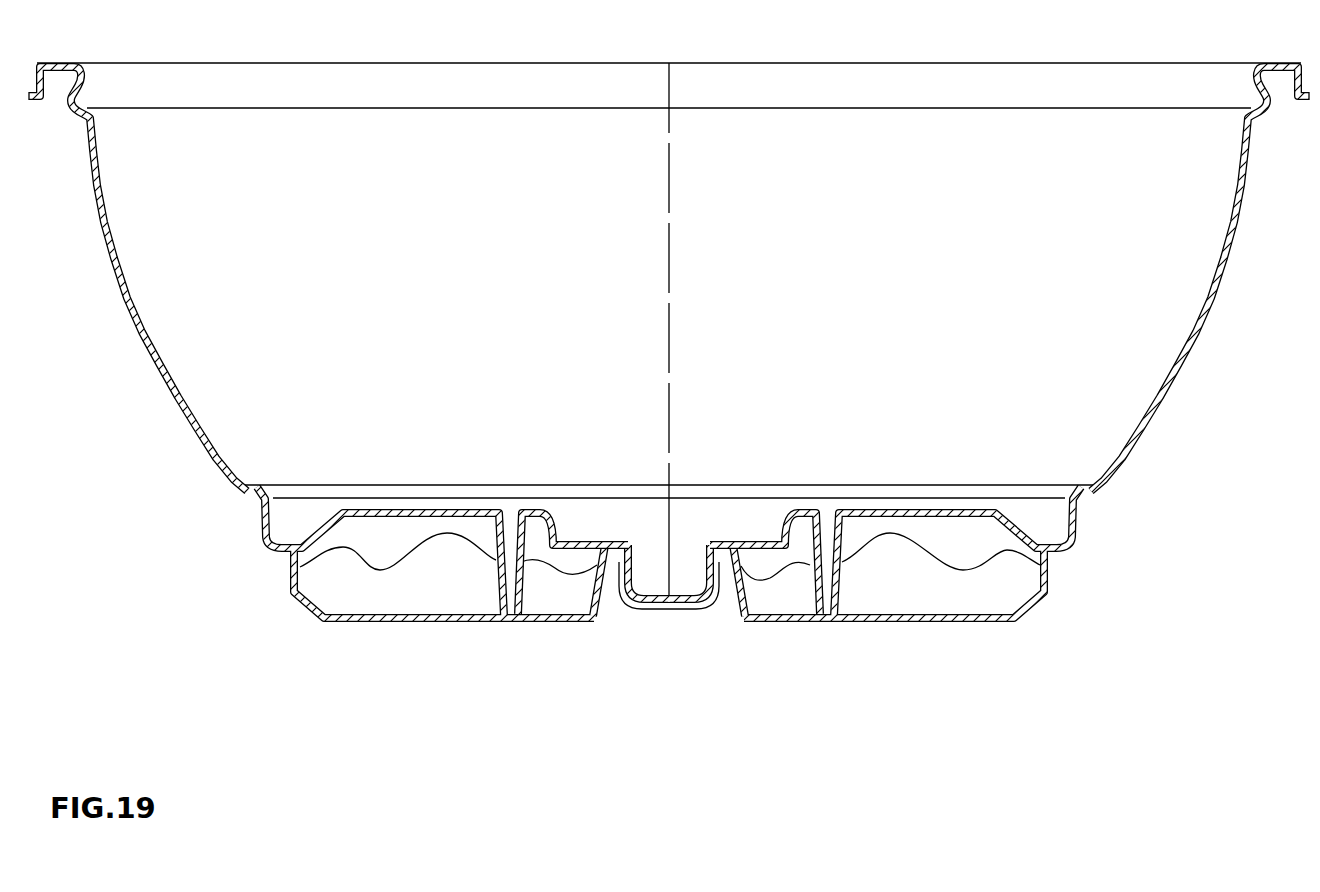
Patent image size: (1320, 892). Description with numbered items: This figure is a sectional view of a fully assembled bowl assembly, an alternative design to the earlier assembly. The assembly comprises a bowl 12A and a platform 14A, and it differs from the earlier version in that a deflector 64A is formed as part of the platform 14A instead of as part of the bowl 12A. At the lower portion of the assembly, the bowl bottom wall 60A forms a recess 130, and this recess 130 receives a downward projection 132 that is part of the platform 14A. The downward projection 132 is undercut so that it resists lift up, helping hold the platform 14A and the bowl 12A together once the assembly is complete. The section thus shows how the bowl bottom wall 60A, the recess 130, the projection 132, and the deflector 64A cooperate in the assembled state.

The bowl 12A is at (1175, 402).
The platform 14A is at (897, 485).
The bowl bottom wall 60A is at (375, 622).
The deflector 64A is at (500, 595).
The recess 130 is at (639, 612).
The downward projection 132 is at (689, 607).